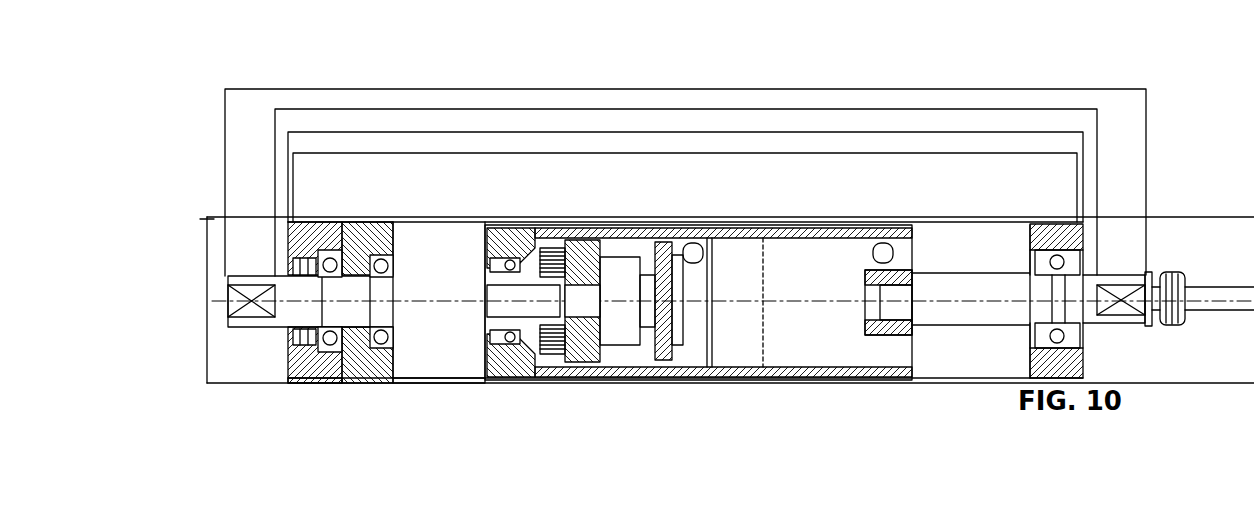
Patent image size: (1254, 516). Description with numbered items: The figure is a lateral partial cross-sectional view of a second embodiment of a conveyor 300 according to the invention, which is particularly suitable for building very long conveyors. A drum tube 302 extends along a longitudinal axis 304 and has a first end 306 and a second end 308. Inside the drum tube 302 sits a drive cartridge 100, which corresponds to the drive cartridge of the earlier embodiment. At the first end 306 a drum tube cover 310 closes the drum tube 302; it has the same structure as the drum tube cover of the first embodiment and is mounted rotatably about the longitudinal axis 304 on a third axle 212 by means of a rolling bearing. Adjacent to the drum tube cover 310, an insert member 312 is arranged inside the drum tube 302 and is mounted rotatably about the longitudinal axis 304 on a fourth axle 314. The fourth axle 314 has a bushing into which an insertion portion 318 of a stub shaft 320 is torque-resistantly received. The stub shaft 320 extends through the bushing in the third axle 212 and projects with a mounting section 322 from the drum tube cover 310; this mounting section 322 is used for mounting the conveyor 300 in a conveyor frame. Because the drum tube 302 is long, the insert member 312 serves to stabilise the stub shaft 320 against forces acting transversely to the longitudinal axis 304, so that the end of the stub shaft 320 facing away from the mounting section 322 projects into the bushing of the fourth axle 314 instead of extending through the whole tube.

The drive cartridge 100 is at (806, 383).
The third axle 212 is at (310, 286).
The conveyor 300 is at (709, 188).
The drum tube 302 is at (437, 383).
The longitudinal axis 304 is at (468, 305).
The first end 306 is at (294, 383).
The second end 308 is at (1082, 222).
The drum tube cover 310 is at (303, 226).
The insert member 312 is at (358, 220).
The fourth axle 314 is at (376, 316).
The insertion portion 318 is at (382, 288).
The stub shaft 320 is at (238, 328).
The mounting section 322 is at (248, 276).